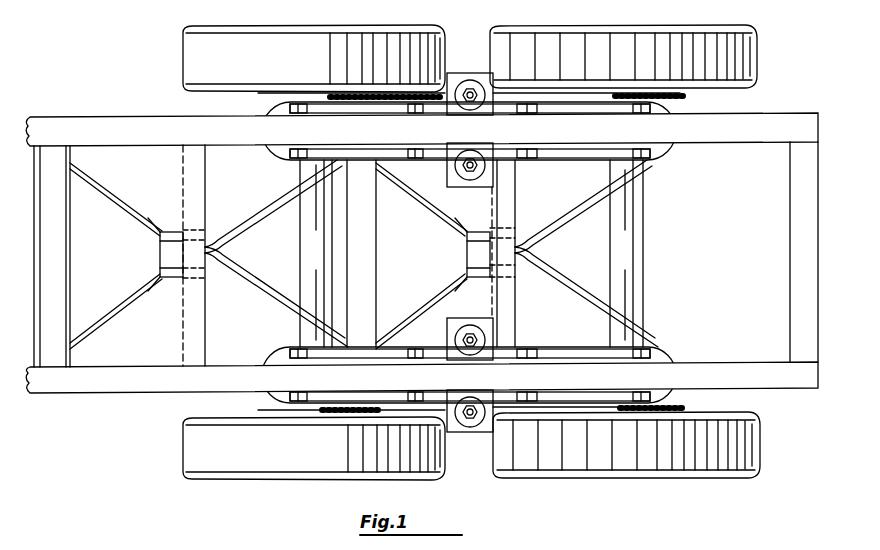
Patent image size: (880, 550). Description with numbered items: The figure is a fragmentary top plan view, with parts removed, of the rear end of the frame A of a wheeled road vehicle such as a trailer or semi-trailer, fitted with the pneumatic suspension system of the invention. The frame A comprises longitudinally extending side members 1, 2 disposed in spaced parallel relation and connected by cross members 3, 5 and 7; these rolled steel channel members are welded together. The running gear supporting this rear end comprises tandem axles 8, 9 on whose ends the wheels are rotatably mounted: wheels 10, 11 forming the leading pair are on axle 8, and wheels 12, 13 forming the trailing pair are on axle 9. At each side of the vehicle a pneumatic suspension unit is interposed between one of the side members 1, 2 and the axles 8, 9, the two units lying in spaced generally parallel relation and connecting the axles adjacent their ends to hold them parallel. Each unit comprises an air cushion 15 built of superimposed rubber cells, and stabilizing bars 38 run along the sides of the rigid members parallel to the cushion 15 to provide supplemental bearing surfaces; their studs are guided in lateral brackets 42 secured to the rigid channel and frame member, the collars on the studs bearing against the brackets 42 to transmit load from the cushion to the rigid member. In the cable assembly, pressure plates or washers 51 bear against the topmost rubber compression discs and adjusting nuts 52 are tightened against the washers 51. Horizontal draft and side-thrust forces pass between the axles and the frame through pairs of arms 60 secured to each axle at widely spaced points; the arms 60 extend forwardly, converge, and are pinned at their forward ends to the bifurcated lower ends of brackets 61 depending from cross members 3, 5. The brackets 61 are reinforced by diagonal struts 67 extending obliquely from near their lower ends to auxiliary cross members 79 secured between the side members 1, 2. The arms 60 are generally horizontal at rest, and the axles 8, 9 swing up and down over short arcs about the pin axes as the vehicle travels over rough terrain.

The frame A is at (71, 110).
The side member 1 is at (115, 385).
The side member 2 is at (130, 117).
The cross member 3 is at (206, 345).
The cross member 5 is at (510, 295).
The cross member 7 is at (790, 302).
The axle 8 is at (302, 267).
The axle 9 is at (636, 264).
The wheel 10 is at (310, 458).
The wheel 11 is at (373, 45).
The wheel 12 is at (695, 462).
The wheel 13 is at (687, 34).
The air cushion 15 is at (562, 161).
The stabilizing bar 38 is at (553, 107).
The lateral bracket 42 is at (405, 106).
The pressure plate 51 is at (455, 73).
The adjusting nut 52 is at (473, 92).
The arm 60 is at (252, 218).
The bracket 61 is at (160, 250).
The diagonal strut 67 is at (122, 212).
The auxiliary cross member 79 is at (62, 248).